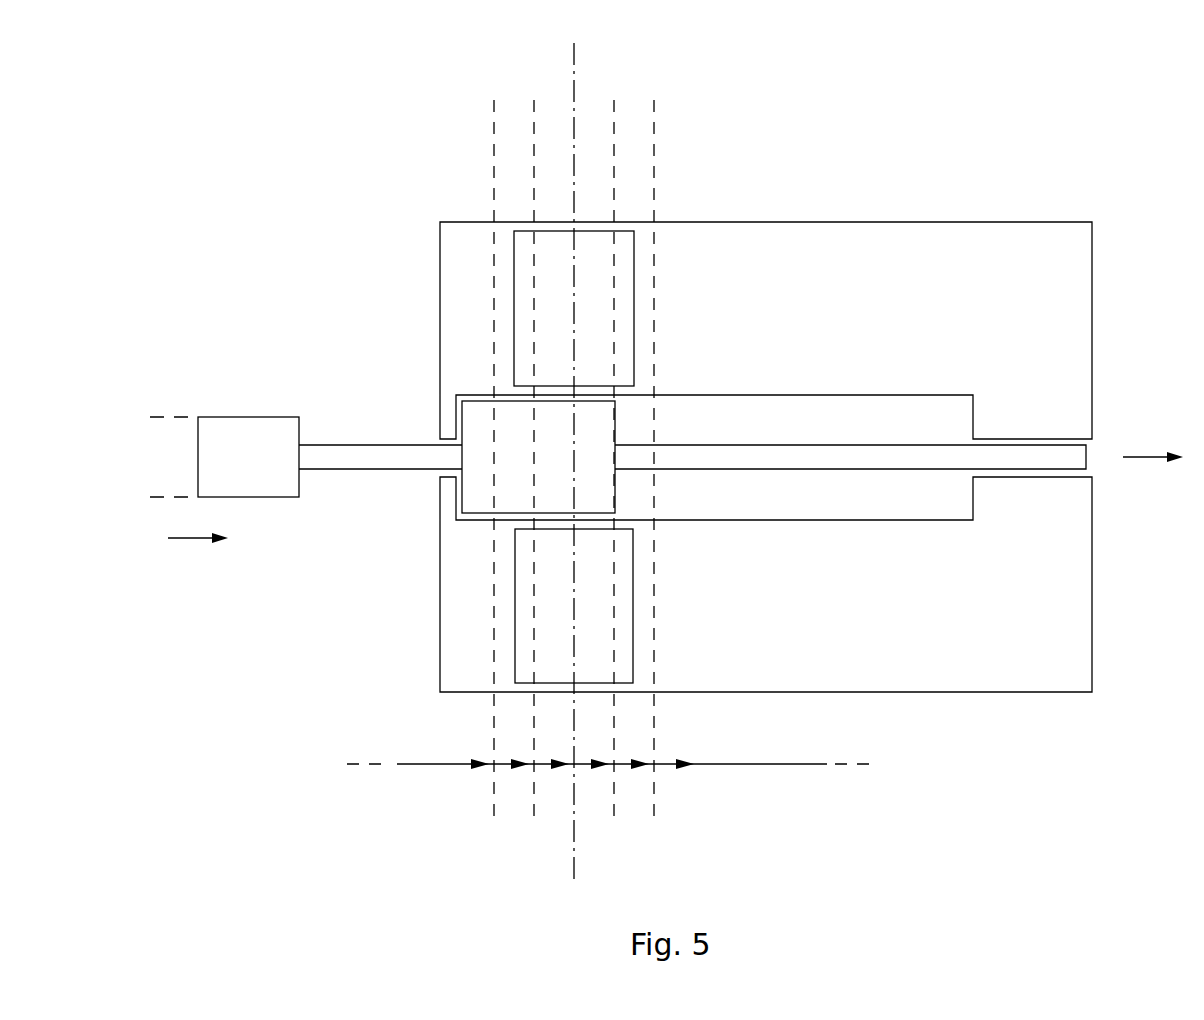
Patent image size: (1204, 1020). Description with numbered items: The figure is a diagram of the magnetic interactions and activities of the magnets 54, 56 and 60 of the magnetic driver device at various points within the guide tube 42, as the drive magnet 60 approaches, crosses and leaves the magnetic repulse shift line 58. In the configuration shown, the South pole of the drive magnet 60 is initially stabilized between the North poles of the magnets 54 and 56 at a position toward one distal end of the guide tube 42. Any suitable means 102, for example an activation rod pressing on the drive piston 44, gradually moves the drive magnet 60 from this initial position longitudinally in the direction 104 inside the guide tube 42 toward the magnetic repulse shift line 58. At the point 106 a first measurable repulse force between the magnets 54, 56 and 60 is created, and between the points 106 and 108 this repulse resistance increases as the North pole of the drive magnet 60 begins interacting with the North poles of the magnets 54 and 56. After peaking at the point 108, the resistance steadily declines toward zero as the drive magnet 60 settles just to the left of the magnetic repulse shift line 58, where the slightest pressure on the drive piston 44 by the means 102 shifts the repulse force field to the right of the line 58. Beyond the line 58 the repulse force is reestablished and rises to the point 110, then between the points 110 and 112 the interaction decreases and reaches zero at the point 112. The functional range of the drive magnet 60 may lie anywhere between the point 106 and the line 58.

The guide tube 42 is at (912, 398).
The drive piston 44 is at (394, 457).
The magnet 54 is at (622, 278).
The magnet 56 is at (624, 630).
The magnetic repulse shift line 58 is at (574, 846).
The drive magnet 60 is at (485, 432).
The means 102 is at (270, 452).
The direction 104 is at (410, 766).
The point 106 is at (494, 823).
The point 108 is at (534, 823).
The point 110 is at (614, 823).
The point 112 is at (654, 778).